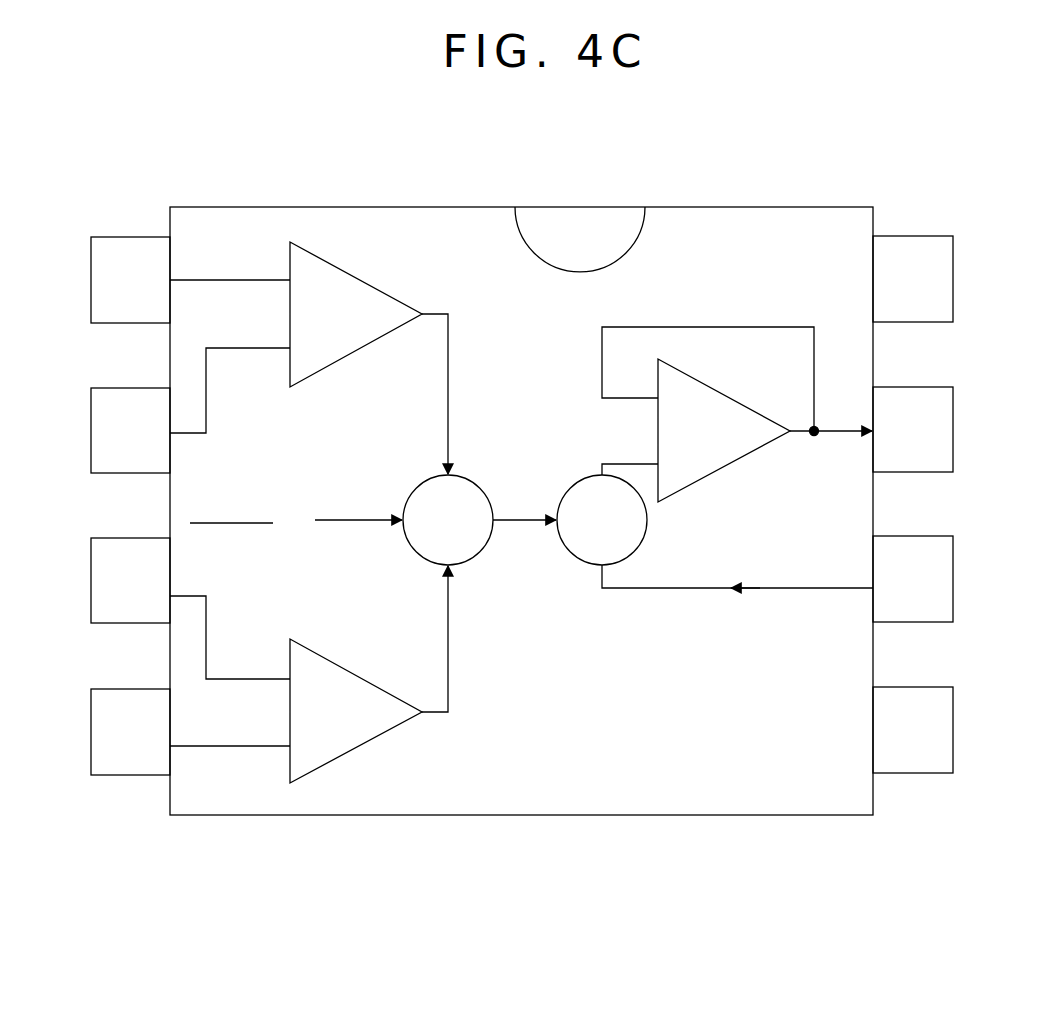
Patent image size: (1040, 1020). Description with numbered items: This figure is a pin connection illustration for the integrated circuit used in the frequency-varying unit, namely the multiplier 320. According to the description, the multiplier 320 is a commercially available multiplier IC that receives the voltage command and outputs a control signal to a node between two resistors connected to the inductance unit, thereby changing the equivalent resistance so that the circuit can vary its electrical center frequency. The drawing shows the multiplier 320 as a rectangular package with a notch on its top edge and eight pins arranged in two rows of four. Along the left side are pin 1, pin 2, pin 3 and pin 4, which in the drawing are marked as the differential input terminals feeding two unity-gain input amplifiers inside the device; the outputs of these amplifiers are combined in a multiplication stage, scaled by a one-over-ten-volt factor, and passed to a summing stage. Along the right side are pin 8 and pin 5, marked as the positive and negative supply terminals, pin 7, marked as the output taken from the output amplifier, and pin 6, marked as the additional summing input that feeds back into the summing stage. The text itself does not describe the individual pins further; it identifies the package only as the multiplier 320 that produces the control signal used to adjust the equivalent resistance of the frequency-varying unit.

The multiplier 320 is at (643, 815).
The pin 1 (X1 input) 1 is at (190, 280).
The pin 2 (X2 input) 2 is at (190, 410).
The pin 3 (X1 input) 3 is at (190, 608).
The pin 4 (X2 input) 4 is at (190, 732).
The pin 5 (-V supply) 5 is at (913, 730).
The pin 6 (Z input) 6 is at (777, 579).
The pin 7 (W output) 7 is at (871, 429).
The pin 8 (+V supply) 8 is at (913, 279).